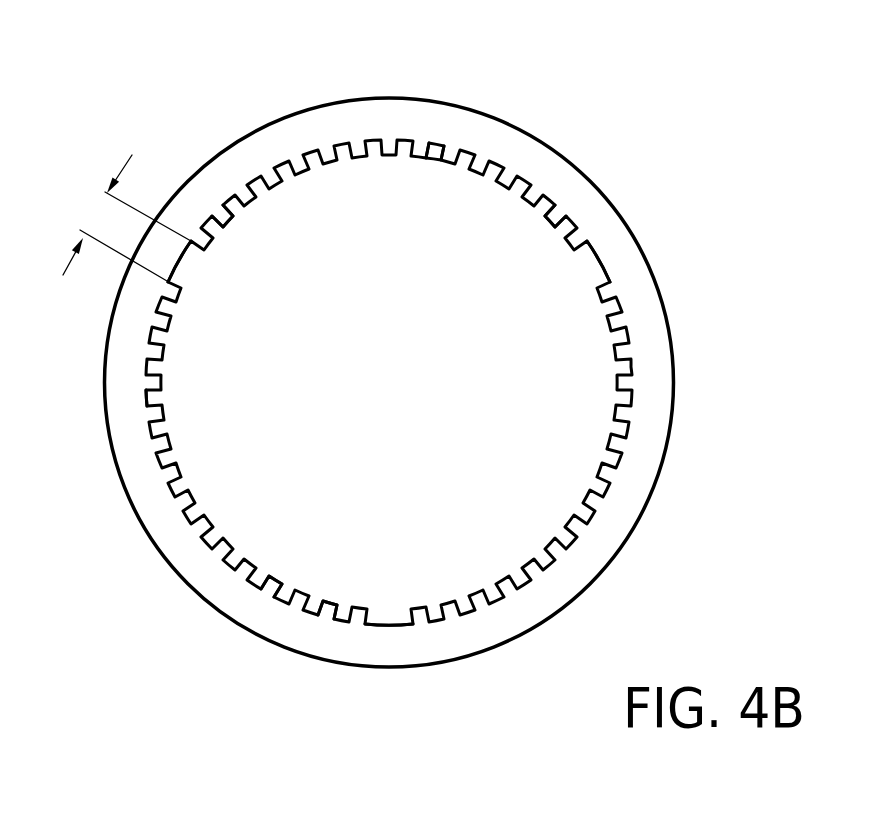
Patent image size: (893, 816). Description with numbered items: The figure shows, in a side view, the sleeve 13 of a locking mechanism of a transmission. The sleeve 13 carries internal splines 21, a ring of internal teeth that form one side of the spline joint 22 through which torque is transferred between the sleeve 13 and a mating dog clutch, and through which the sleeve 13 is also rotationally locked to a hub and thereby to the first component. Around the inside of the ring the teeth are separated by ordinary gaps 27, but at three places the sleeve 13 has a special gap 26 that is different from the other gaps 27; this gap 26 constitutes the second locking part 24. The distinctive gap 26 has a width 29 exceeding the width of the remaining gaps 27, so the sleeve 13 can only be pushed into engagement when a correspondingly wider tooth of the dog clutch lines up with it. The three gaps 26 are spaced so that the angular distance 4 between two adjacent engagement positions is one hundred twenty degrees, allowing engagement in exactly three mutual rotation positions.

The angular distance 4 is at (308, 135).
The sleeve 13 is at (387, 380).
The internal splines 21 is at (387, 143).
The spline joint 22 is at (274, 563).
The second locking part 24 is at (201, 289).
The gap 26 is at (186, 264).
The other gaps 27 is at (467, 157).
The width 29 is at (98, 213).